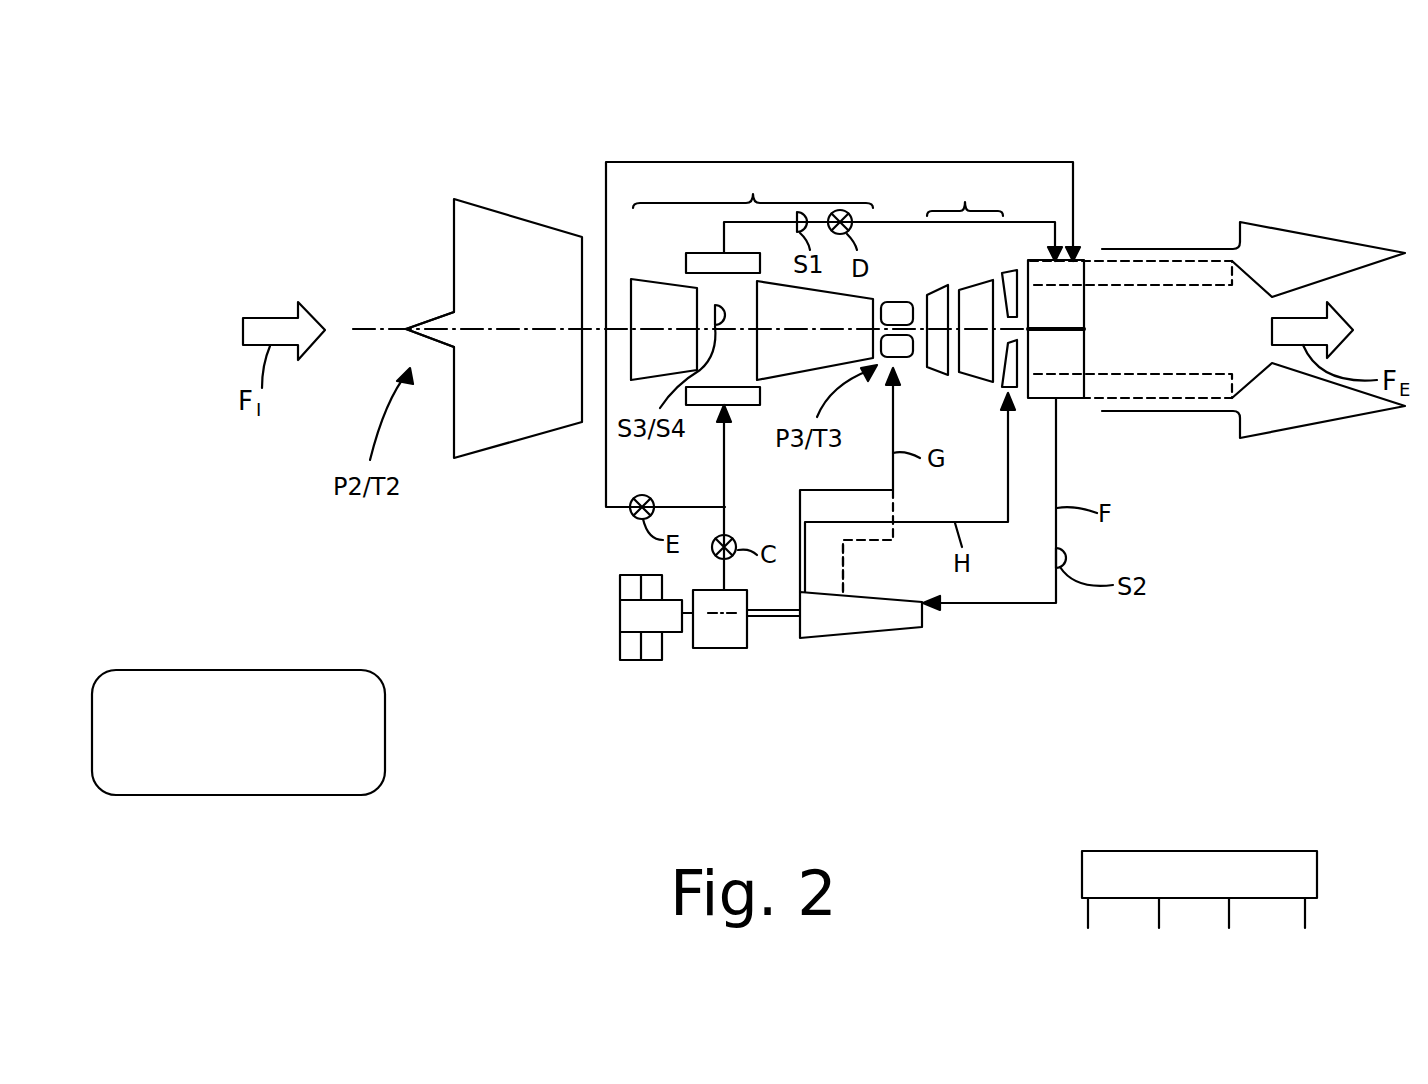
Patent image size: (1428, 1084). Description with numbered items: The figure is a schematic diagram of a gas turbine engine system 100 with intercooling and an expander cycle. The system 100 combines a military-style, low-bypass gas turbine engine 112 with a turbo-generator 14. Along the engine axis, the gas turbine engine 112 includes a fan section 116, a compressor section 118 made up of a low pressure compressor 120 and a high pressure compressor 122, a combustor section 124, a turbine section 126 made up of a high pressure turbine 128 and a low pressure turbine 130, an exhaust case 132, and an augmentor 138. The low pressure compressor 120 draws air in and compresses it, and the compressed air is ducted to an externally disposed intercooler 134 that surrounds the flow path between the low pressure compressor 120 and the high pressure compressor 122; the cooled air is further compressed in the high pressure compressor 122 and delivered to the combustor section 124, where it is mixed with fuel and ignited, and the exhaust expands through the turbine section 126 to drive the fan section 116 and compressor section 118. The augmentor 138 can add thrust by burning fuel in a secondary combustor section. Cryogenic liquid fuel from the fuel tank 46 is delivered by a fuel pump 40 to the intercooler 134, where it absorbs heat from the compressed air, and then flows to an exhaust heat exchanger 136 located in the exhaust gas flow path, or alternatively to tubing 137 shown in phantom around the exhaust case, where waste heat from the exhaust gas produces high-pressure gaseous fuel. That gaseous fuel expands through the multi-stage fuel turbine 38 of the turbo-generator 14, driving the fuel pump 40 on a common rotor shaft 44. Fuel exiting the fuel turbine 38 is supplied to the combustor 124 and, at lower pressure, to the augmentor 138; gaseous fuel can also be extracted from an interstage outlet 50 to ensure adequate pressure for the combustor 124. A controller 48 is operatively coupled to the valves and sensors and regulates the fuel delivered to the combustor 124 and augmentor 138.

The gas turbine engine system 100 is at (1201, 138).
The gas turbine engine 112 is at (432, 232).
The fan section 116 is at (539, 300).
The compressor section 118 is at (753, 187).
The low pressure compressor 120 is at (686, 318).
The high pressure compressor 122 is at (813, 318).
The combustor section 124 is at (892, 298).
The turbine section 126 is at (965, 192).
The high pressure turbine 128 is at (937, 293).
The low pressure turbine 130 is at (977, 381).
The exhaust case 132 is at (1160, 413).
The intercooler 134 is at (703, 250).
The exhaust heat exchanger 136 is at (1085, 312).
The exhaust heat exchanger tubing 137 is at (1170, 285).
The augmentor 138 is at (1003, 268).
The turbo-generator 14 is at (998, 709).
The fuel turbine 38 is at (847, 638).
The fuel pump 40 is at (738, 643).
The rotor shaft 44 is at (768, 619).
The fuel tank 46 is at (250, 775).
The controller 48 is at (1296, 890).
The interstage outlet 50 is at (845, 591).